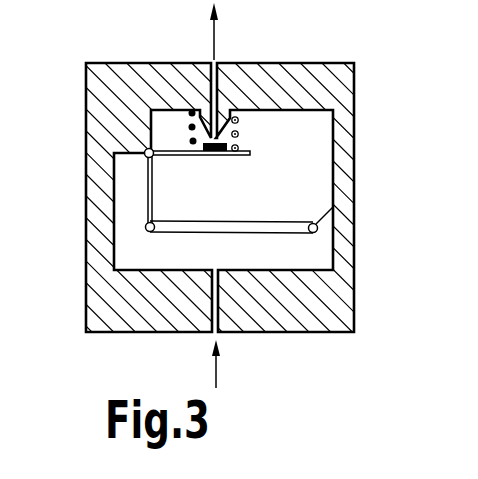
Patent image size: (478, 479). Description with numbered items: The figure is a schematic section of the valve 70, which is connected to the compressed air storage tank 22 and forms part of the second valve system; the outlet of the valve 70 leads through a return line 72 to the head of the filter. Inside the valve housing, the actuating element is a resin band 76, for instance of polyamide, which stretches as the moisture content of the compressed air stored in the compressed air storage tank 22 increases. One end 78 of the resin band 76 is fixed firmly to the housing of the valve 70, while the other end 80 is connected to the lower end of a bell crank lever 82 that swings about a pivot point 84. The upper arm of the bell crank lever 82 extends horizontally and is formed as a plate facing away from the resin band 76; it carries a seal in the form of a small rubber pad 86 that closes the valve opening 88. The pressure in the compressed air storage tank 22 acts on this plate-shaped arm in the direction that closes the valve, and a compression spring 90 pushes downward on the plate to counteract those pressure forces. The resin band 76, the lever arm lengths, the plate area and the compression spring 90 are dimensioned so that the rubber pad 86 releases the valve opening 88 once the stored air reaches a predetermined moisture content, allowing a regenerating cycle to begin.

The valve 70 is at (343, 137).
The return line 72 is at (214, 37).
The resin band 76 is at (205, 235).
The one end of resin band 78 is at (316, 232).
The other end of resin band 80 is at (146, 228).
The bell crank lever 82 is at (152, 183).
The pivot point 84 is at (146, 155).
The rubber pad 86 is at (225, 152).
The valve opening 88 is at (240, 125).
The compression spring 90 is at (188, 127).
The compressed air storage tank 22 is at (256, 365).